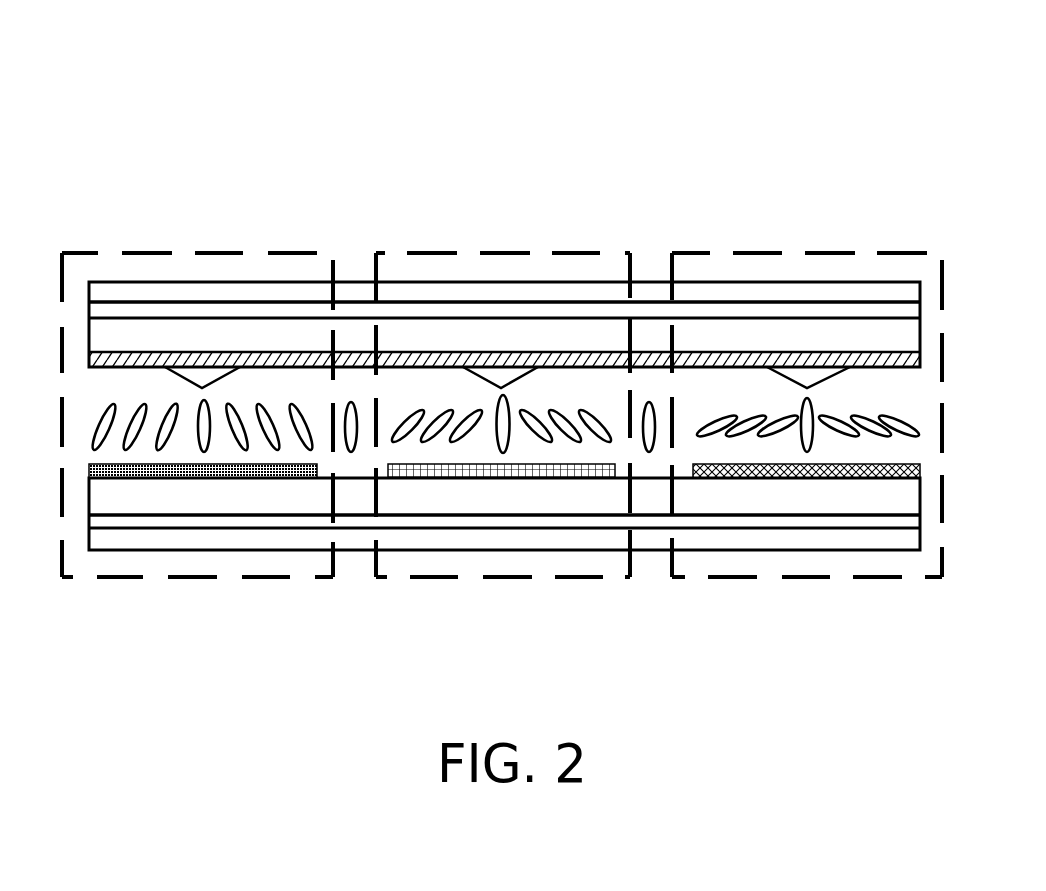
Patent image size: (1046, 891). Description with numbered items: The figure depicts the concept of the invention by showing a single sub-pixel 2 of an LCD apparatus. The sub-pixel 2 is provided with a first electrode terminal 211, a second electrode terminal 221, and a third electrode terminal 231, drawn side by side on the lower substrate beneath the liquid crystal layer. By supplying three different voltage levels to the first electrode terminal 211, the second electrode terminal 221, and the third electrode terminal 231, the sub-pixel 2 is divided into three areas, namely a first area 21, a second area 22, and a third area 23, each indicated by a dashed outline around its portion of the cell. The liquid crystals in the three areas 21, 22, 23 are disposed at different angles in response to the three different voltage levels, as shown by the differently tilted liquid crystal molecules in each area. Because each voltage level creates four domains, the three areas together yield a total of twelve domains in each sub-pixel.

The sub-pixel 2 is at (475, 73).
The first area 21 is at (220, 248).
The second area 22 is at (502, 248).
The third area 23 is at (780, 250).
The first electrode terminal 211 is at (171, 483).
The second electrode terminal 221 is at (479, 483).
The third electrode terminal 231 is at (782, 483).